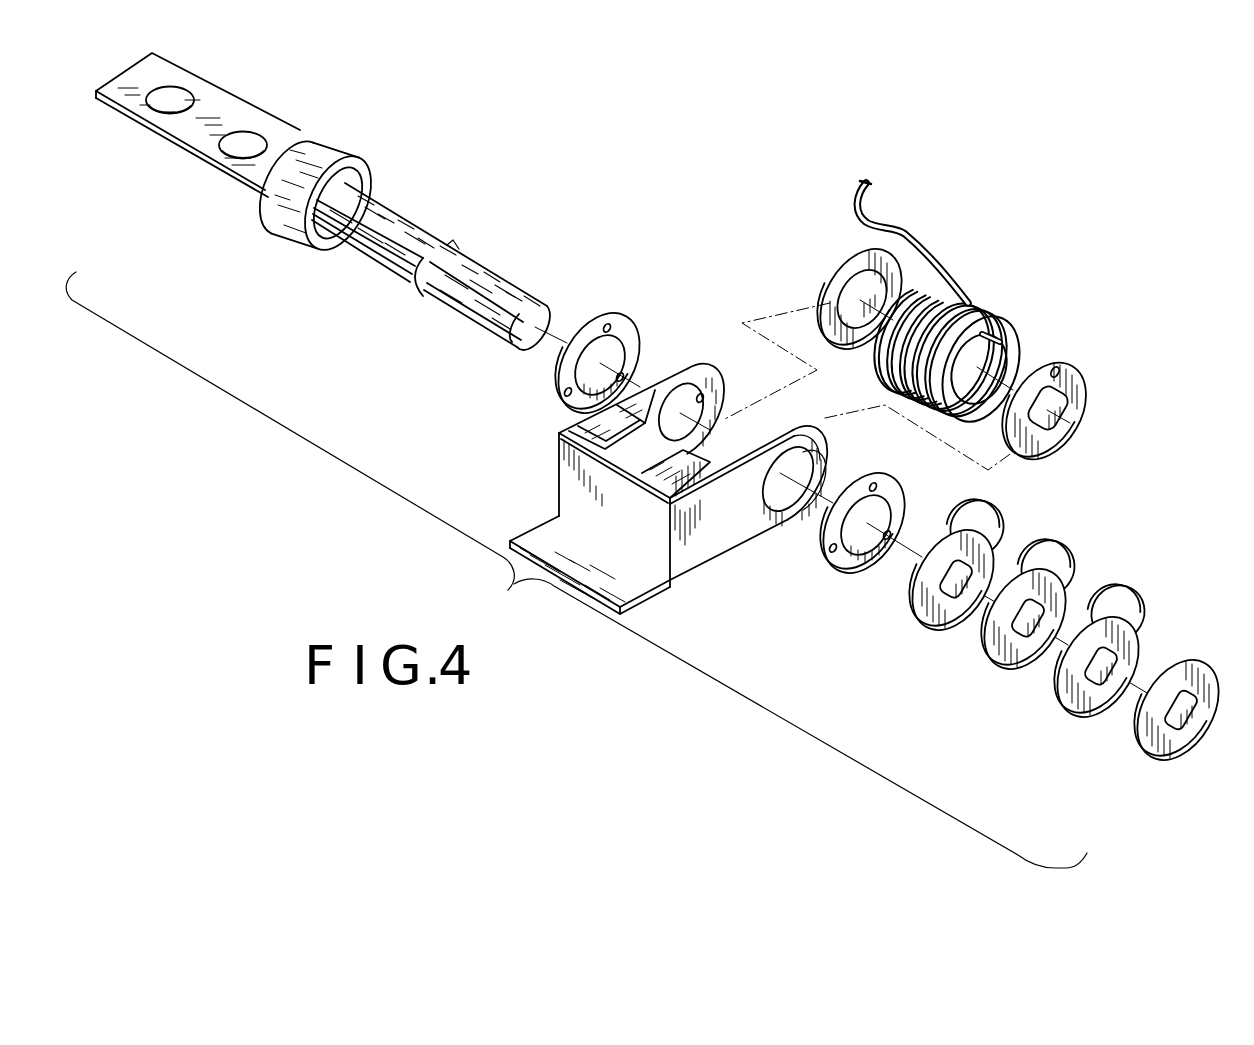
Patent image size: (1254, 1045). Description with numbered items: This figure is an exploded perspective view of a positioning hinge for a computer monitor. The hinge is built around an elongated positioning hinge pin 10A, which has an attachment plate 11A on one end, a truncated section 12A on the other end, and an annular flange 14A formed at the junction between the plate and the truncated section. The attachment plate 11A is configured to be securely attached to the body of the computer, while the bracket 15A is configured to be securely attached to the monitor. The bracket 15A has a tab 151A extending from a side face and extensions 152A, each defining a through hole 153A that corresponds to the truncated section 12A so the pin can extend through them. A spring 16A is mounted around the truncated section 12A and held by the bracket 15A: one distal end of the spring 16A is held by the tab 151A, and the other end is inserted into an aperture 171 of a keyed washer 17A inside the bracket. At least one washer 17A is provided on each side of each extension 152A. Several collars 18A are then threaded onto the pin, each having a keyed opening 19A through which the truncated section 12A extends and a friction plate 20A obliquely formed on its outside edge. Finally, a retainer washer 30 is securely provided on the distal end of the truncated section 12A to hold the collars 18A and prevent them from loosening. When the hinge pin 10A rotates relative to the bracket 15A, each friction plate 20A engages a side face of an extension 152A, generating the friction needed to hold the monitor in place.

The positioning hinge pin 10A is at (412, 176).
The attachment plate 11A is at (222, 106).
The truncated section 12A is at (371, 258).
The annular flange 14A is at (333, 146).
The bracket 15A is at (690, 590).
The tab 151A is at (591, 433).
The extension 152A is at (754, 536).
The through hole 153A is at (700, 398).
The spring 16A is at (967, 310).
The aperture 171 is at (1057, 368).
The washer 17A is at (622, 331).
The collar 18A is at (940, 624).
The keyed opening 19A is at (920, 609).
The friction plate 20A is at (987, 523).
The retainer washer 30 is at (1210, 674).